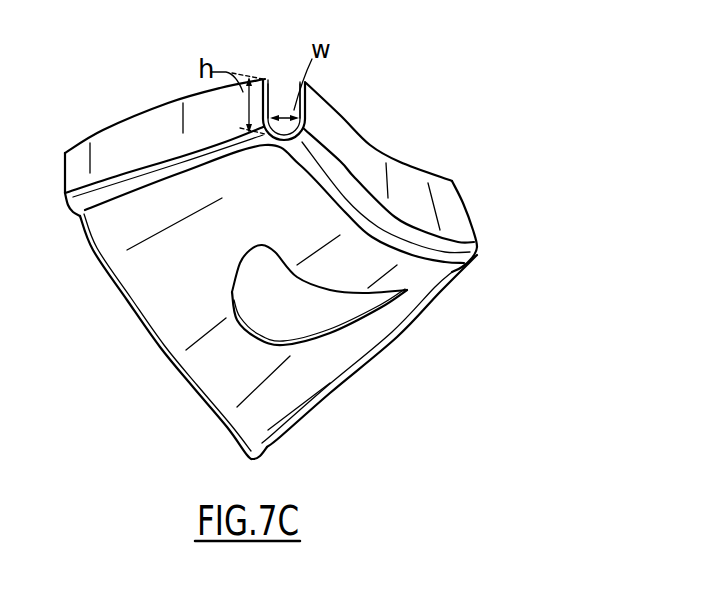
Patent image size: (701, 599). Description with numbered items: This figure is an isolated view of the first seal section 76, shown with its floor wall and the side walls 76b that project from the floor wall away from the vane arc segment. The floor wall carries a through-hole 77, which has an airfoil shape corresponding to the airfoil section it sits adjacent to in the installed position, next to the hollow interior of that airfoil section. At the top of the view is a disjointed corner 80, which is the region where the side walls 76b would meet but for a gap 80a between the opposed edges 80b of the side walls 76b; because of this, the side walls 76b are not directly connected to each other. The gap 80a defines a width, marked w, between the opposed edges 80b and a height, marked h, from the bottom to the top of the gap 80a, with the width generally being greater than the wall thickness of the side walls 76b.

The first seal section 76 is at (427, 136).
The side walls 76b is at (170, 103).
The through-hole 77 is at (331, 297).
The disjointed corners 80 is at (285, 70).
The gaps 80a is at (306, 90).
The opposed edges 80b is at (277, 82).